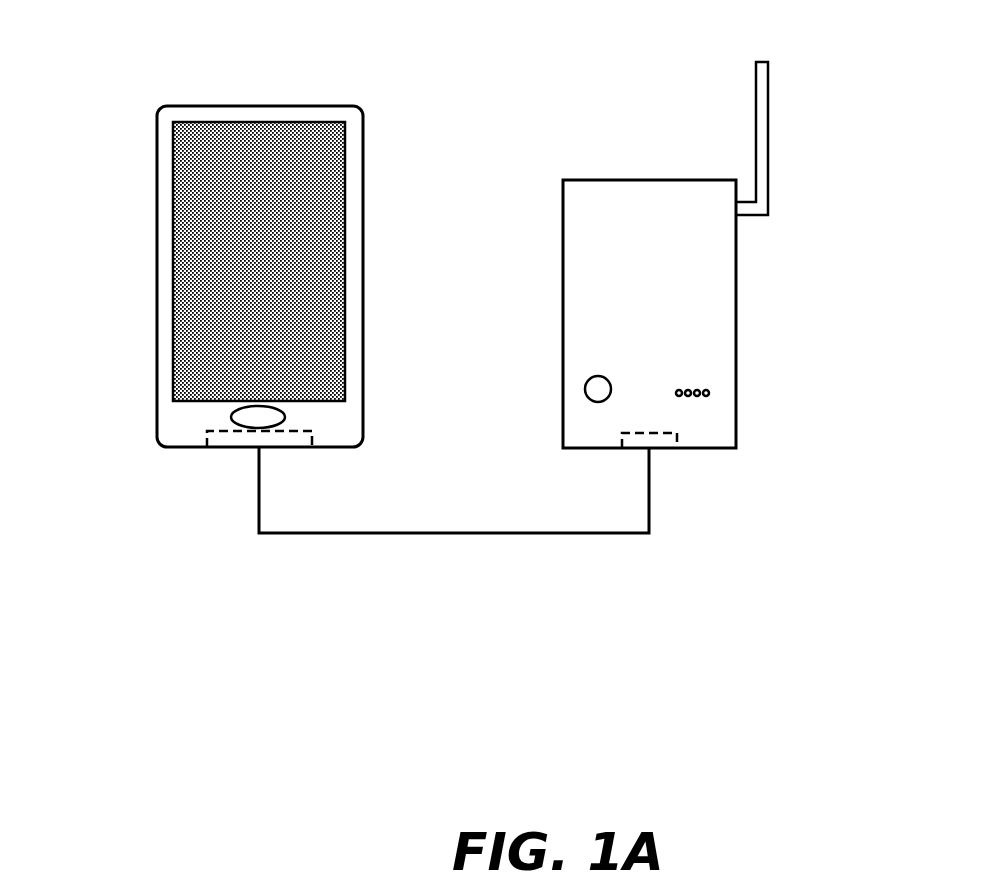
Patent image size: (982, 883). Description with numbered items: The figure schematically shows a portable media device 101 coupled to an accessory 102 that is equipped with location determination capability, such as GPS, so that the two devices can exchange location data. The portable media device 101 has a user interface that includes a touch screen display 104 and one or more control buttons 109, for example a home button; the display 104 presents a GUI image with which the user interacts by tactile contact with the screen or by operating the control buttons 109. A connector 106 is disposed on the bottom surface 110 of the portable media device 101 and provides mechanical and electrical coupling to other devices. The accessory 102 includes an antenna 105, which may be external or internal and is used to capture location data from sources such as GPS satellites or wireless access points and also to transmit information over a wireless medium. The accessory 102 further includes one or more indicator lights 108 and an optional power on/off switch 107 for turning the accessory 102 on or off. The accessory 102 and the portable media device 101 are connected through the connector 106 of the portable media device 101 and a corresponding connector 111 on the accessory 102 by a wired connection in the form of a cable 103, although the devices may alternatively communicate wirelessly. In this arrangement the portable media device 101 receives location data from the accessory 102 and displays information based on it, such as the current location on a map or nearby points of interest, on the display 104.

The portable media device 101 is at (260, 106).
The accessory 102 is at (583, 180).
The cable 103 is at (413, 533).
The touch screen display 104 is at (172, 260).
The antenna 105 is at (768, 159).
The connector 106 is at (207, 437).
The power on/off switch 107 is at (598, 402).
The indicator lights 108 is at (692, 405).
The control buttons 109 is at (285, 417).
The bottom surface 110 is at (283, 450).
The connector 111 is at (650, 450).